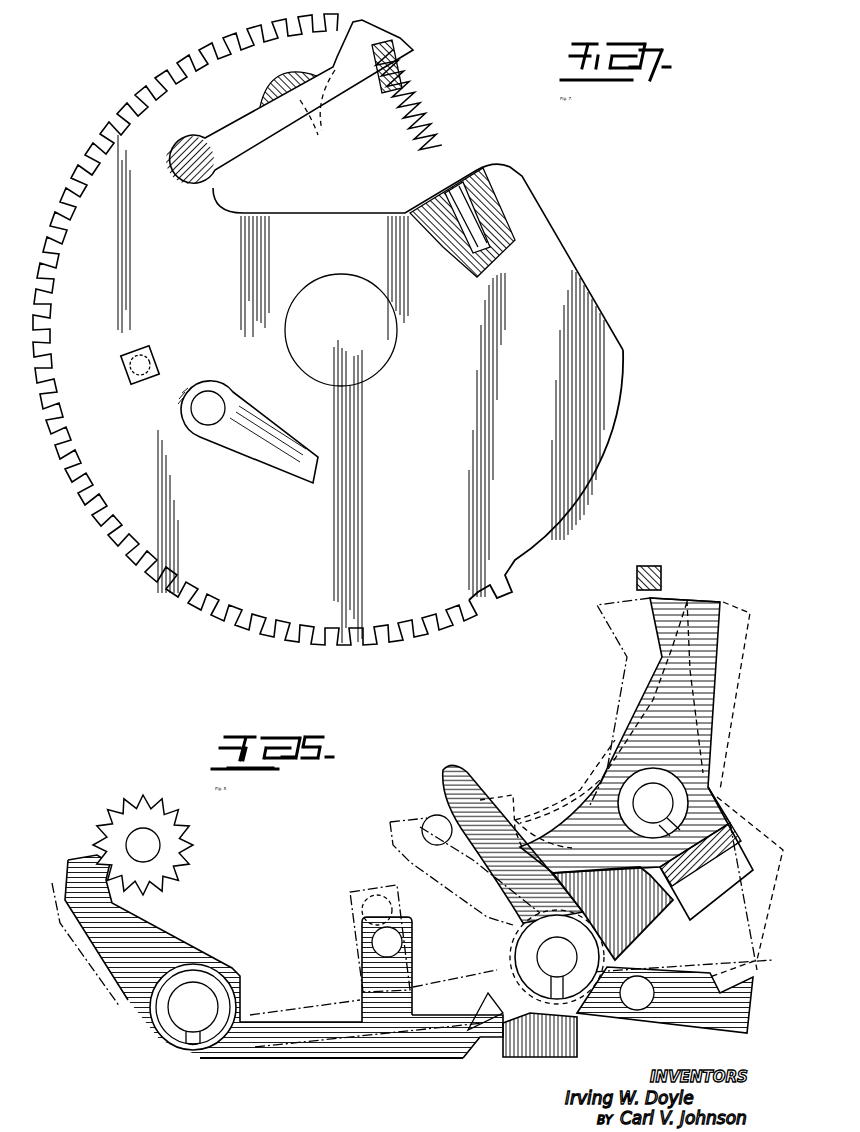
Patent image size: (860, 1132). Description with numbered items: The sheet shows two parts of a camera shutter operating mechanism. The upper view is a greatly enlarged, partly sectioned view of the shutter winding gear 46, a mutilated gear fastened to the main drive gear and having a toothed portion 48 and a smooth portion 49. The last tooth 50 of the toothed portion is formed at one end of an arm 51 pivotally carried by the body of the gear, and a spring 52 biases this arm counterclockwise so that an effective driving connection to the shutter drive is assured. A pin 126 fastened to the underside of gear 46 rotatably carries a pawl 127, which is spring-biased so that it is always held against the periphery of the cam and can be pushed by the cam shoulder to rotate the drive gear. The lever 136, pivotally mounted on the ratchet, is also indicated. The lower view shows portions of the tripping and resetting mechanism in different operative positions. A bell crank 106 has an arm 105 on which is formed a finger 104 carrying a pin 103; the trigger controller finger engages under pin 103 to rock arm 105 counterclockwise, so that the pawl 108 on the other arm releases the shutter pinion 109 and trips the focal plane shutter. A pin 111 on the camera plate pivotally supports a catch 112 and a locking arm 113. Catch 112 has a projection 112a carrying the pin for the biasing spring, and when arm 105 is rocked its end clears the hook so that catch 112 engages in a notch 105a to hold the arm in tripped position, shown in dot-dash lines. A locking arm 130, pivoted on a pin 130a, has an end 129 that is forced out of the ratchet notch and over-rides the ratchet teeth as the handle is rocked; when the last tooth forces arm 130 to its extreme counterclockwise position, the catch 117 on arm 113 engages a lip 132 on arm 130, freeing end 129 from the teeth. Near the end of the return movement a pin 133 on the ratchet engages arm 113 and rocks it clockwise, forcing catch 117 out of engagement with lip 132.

In FIG. 7, the shutter winding gear 46 is at (583, 440).
In FIG. 7, the toothed portion 48 is at (458, 622).
In FIG. 7, the smooth portion 49 is at (595, 473).
In FIG. 7, the last tooth 50 is at (362, 24).
In FIG. 7, the arm 51 is at (347, 95).
In FIG. 7, the spring 52 is at (425, 117).
In FIG. 7, the lever 136 is at (133, 350).
In FIG. 5, the lever 136 is at (650, 565).
In FIG. 7, the pin 126 is at (210, 395).
In FIG. 7, the pawl 127 is at (234, 444).
In FIG. 5, the pin 103 is at (372, 942).
In FIG. 5, the finger 104 is at (362, 976).
In FIG. 5, the arm 105 is at (405, 1060).
In FIG. 5, the notch 105a is at (487, 1040).
In FIG. 5, the bell crank 106 is at (325, 1060).
In FIG. 5, the pawl 108 is at (76, 852).
In FIG. 5, the shutter pinion 109 is at (170, 890).
In FIG. 5, the pin 111 is at (552, 957).
In FIG. 5, the catch 112 is at (532, 1058).
In FIG. 5, the projection 112a is at (640, 886).
In FIG. 5, the locking arm 113 is at (520, 920).
In FIG. 5, the catch 117 is at (750, 990).
In FIG. 5, the end of locking arm 129 is at (513, 793).
In FIG. 5, the locking arm 130 is at (610, 760).
In FIG. 5, the pin 130a is at (665, 580).
In FIG. 5, the lip 132 is at (697, 925).
In FIG. 5, the pin 133 is at (430, 815).